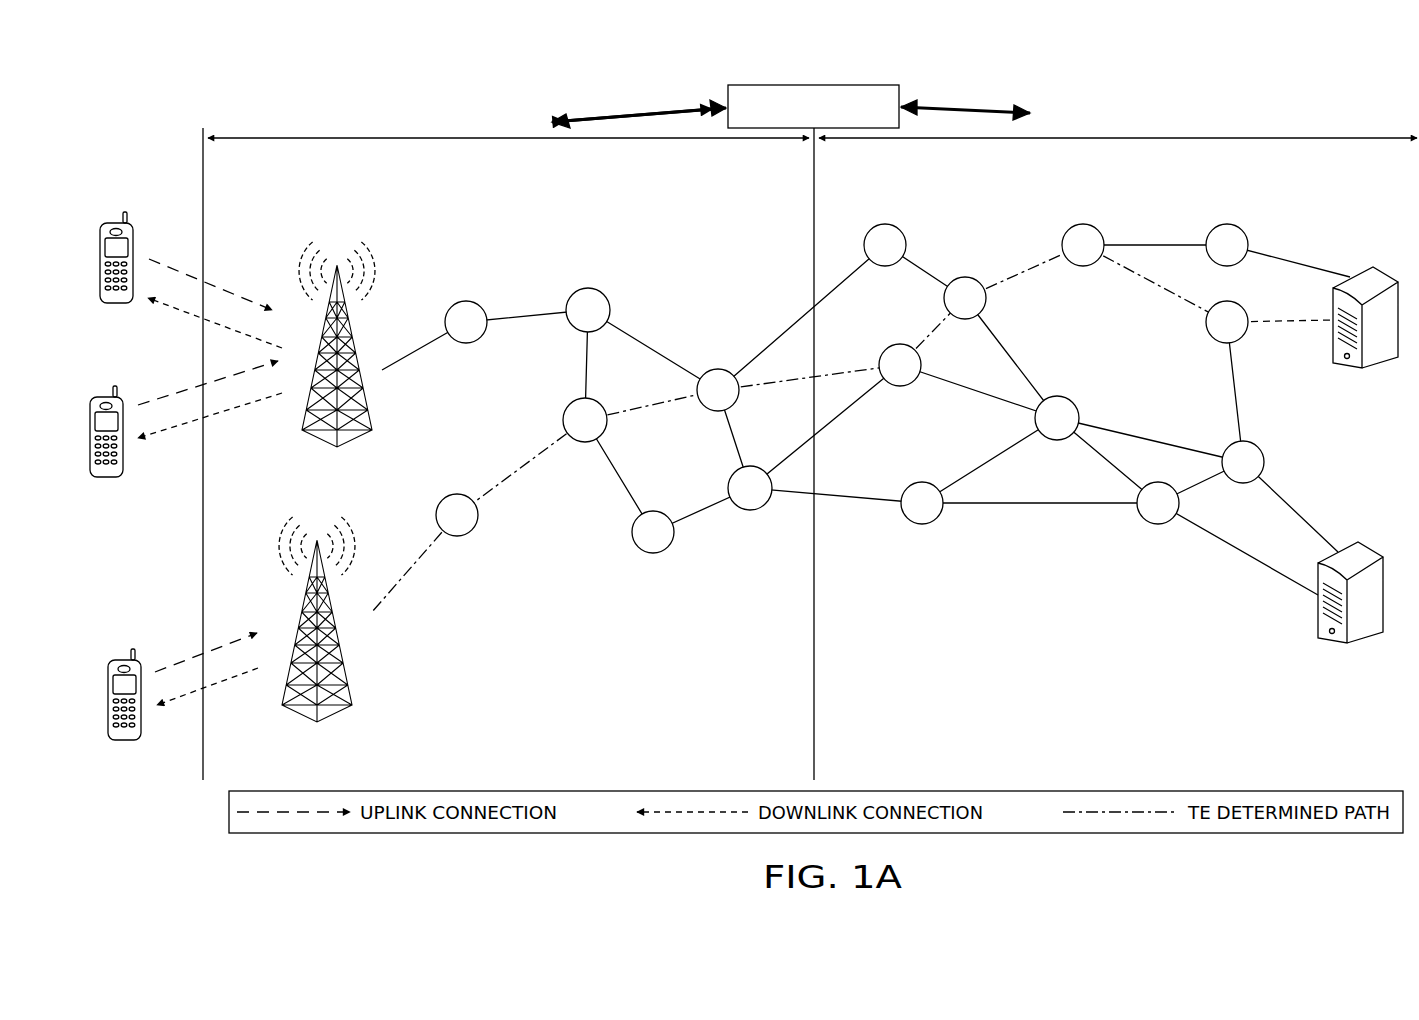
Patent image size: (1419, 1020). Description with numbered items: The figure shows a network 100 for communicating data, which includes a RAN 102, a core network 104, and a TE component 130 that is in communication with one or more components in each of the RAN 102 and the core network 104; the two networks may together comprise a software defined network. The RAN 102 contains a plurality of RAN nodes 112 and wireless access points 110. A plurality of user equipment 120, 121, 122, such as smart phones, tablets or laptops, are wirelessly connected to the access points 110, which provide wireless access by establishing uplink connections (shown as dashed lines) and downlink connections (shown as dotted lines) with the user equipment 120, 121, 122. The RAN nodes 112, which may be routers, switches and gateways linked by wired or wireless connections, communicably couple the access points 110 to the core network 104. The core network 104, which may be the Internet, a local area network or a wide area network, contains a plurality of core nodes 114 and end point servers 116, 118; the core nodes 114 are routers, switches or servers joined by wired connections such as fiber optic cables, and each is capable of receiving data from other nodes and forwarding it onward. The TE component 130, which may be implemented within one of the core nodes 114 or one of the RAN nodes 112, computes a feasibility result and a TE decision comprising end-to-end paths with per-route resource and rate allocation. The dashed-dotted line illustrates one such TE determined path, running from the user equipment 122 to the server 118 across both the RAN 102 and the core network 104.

The network 100 is at (348, 88).
The RAN 102 is at (475, 136).
The core network 104 is at (1210, 136).
The wireless access points 110 is at (302, 715).
The RAN nodes 112 is at (750, 510).
The core nodes 114 is at (1255, 442).
The end point server 116 is at (1365, 635).
The end point server 118 is at (1380, 365).
The user equipment 120 is at (113, 304).
The user equipment 121 is at (105, 474).
The user equipment 122 is at (120, 739).
The TE component 130 is at (845, 85).